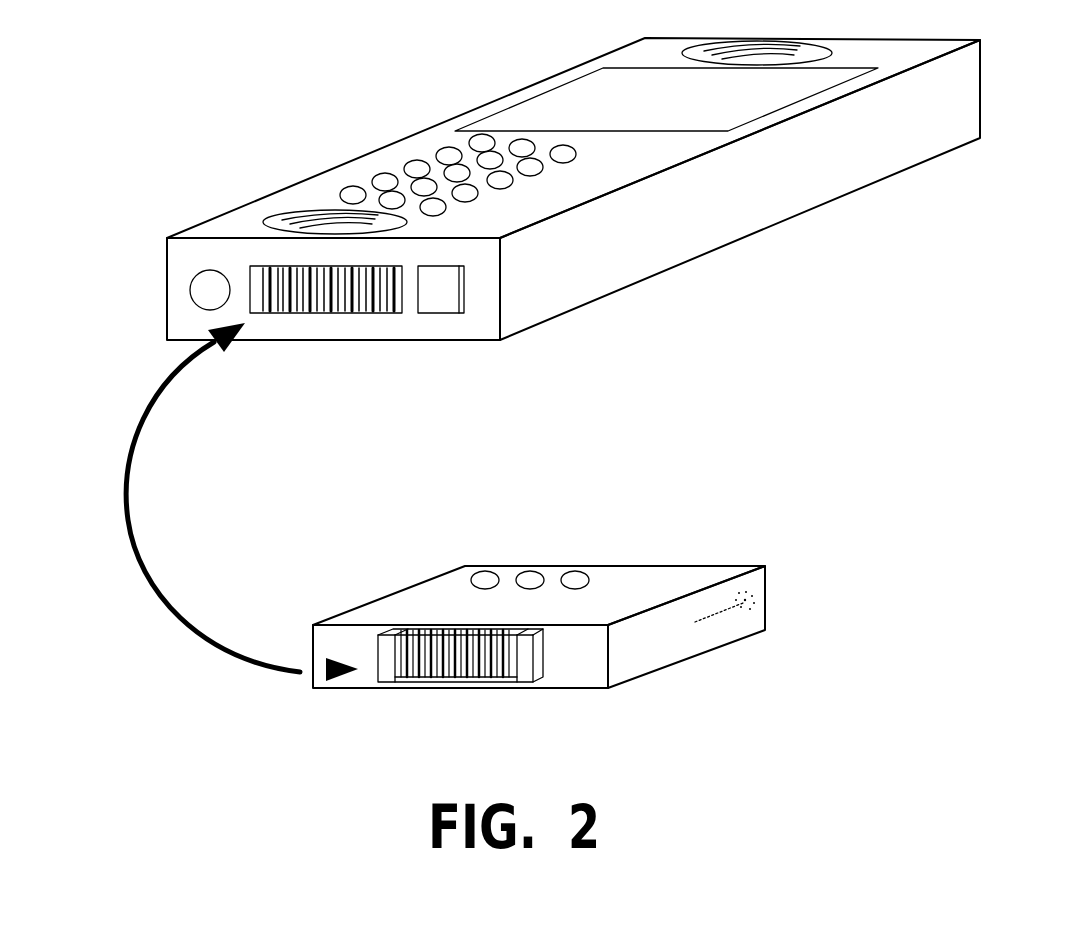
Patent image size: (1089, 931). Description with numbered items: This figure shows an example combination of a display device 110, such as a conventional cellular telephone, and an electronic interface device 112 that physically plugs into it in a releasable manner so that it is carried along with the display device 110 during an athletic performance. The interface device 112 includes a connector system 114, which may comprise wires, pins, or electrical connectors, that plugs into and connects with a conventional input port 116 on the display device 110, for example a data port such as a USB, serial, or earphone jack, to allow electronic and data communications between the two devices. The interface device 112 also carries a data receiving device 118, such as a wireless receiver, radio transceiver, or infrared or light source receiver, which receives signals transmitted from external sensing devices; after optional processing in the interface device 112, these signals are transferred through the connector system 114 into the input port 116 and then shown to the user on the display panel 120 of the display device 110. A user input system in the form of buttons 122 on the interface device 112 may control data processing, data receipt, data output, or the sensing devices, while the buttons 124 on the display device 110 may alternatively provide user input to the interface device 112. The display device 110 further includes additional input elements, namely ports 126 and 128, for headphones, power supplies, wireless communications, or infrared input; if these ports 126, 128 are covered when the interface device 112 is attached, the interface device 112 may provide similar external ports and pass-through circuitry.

The display device 110 is at (968, 183).
The electronic interface device 112 is at (745, 675).
The connector system 114 is at (535, 683).
The input port 116 is at (383, 314).
The data receiving device 118 is at (725, 610).
The display panel 120 is at (578, 115).
The buttons 122 is at (488, 571).
The buttons 124 is at (437, 157).
The port 126 is at (465, 290).
The port 128 is at (192, 283).